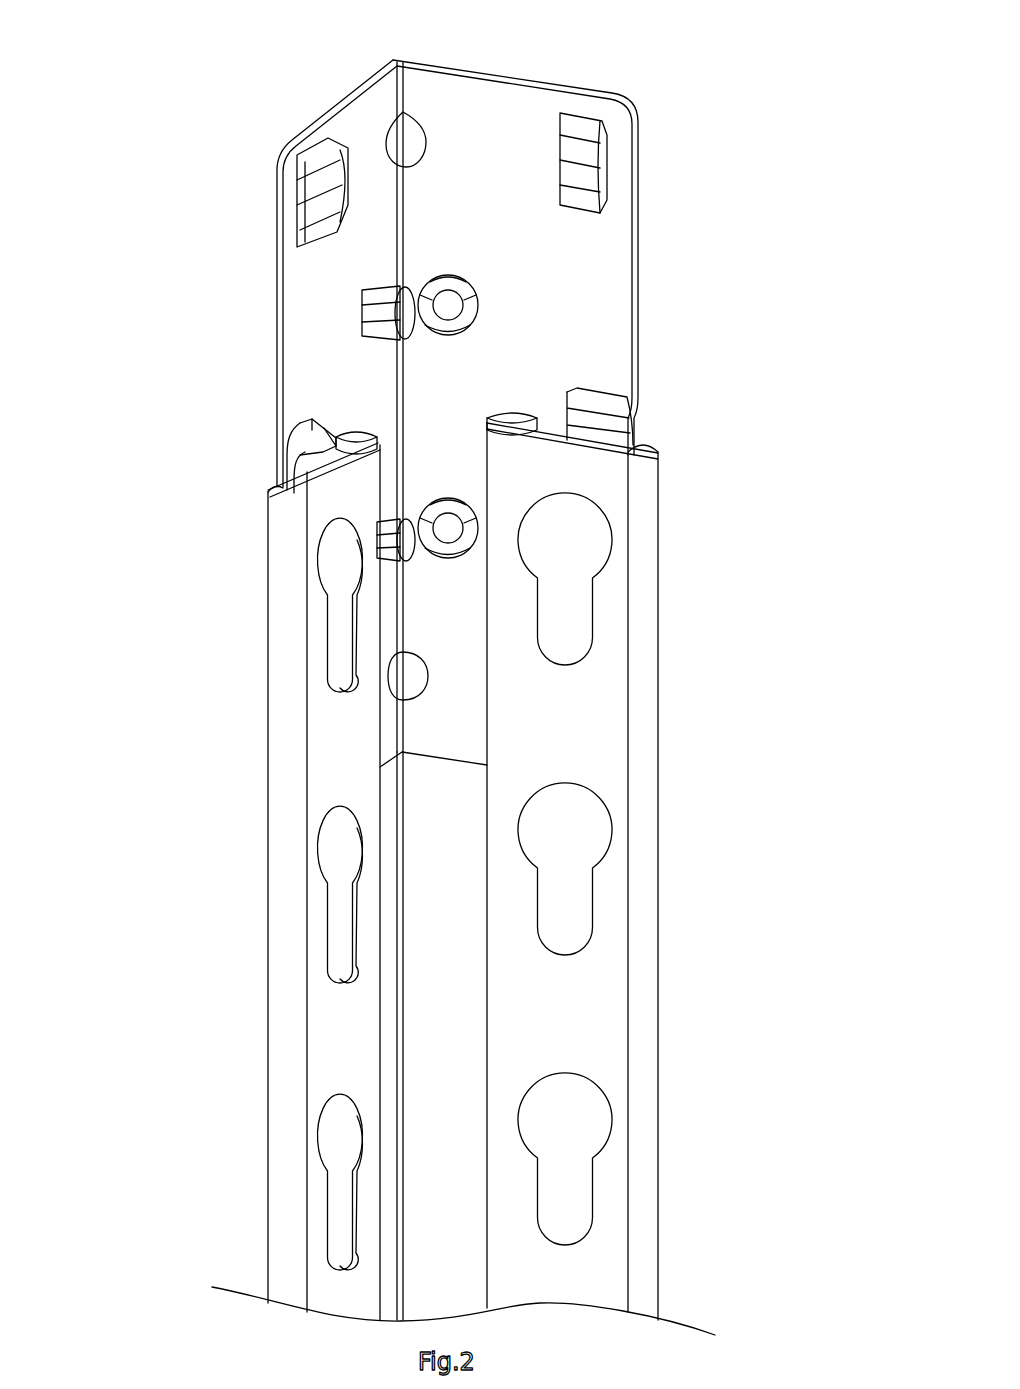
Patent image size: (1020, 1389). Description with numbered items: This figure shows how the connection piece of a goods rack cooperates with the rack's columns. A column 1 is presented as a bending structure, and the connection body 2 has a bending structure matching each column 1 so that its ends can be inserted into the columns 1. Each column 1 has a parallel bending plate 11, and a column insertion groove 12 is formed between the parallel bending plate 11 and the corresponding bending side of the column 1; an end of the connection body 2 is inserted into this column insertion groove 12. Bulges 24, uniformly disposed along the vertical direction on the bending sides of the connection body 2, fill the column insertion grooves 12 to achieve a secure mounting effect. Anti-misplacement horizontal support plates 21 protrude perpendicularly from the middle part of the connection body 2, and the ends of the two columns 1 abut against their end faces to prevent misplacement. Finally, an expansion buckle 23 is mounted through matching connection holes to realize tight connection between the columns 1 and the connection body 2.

The column 1 is at (446, 879).
The connection body 2 is at (458, 160).
The parallel bending plate 11 is at (335, 502).
The column insertion groove 12 is at (268, 505).
The anti-misplacement horizontal support plate 21 is at (520, 415).
The expansion buckle 23 is at (378, 322).
The bulge 24 is at (285, 448).